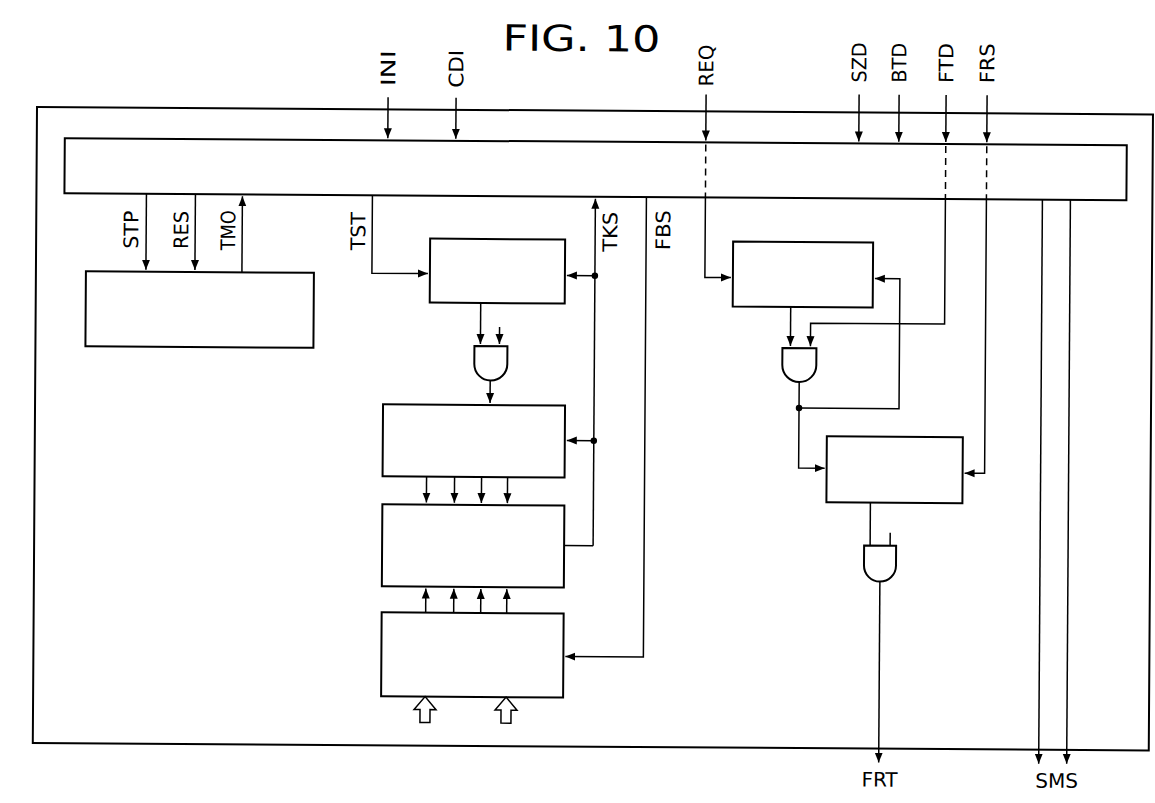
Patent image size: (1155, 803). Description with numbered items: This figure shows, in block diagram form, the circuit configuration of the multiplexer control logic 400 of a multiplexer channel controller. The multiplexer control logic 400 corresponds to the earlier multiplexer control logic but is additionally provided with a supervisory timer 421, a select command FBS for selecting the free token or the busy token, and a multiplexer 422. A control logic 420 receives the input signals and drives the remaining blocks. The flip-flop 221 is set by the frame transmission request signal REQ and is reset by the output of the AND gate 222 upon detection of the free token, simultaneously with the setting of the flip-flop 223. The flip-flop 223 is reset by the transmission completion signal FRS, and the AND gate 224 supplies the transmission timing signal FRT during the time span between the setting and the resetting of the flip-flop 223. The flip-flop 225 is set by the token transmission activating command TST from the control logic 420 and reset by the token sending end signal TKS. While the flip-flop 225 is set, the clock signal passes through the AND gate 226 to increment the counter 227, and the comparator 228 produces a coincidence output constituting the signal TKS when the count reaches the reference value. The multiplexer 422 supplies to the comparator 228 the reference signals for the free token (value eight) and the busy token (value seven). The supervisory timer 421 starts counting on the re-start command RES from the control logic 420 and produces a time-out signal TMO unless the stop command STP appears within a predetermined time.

The multiplexer control logic 400 is at (1053, 107).
The control logic 420 is at (1106, 138).
The supervisory timer 421 is at (209, 348).
The multiplexer 422 is at (385, 654).
The flip-flop 221 is at (791, 237).
The AND gate 222 is at (818, 364).
The flip-flop 223 is at (944, 431).
The AND gate 224 is at (899, 558).
The flip-flop 225 is at (494, 236).
The AND gate 226 is at (509, 362).
The counter 227 is at (385, 438).
The comparator 228 is at (385, 544).